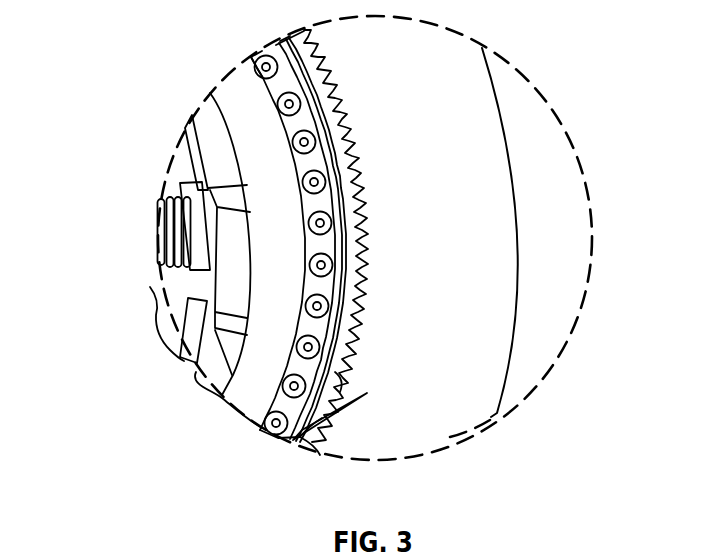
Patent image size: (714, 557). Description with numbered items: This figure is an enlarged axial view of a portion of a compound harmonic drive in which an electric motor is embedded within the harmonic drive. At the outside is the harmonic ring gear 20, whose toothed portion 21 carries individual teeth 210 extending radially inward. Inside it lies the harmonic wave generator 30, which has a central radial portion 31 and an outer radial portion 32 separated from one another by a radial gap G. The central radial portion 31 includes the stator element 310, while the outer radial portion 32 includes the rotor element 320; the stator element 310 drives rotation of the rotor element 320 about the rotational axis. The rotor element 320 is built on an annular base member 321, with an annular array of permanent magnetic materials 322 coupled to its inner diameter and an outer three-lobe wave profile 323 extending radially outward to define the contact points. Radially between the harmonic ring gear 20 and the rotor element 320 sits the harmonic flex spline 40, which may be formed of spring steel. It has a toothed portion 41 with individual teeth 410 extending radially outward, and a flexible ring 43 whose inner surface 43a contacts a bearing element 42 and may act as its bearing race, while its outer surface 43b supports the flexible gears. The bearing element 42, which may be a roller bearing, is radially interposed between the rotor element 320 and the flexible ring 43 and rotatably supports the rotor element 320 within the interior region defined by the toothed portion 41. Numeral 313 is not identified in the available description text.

The harmonic ring gear 20 is at (498, 227).
The toothed portion 21 is at (457, 420).
The individual teeth 210 is at (368, 394).
The harmonic wave generator 30 is at (278, 273).
The central radial portion 31 is at (157, 322).
The outer radial portion 32 is at (232, 420).
The stator element 310 is at (196, 218).
The coil winding 313 is at (163, 238).
The rotor element 320 is at (213, 110).
The annular base member 321 is at (335, 372).
The permanent magnetic materials 322 is at (190, 158).
The outer three-lobe wave profile 323 is at (254, 67).
The harmonic flex spline 40 is at (357, 199).
The toothed portion 41 is at (312, 440).
The individual teeth 410 is at (293, 436).
The bearing element 42 is at (300, 36).
The flexible ring 43 is at (322, 131).
The inner surface 43a is at (313, 221).
The outer surface 43b is at (320, 96).
The radial gap G is at (194, 170).